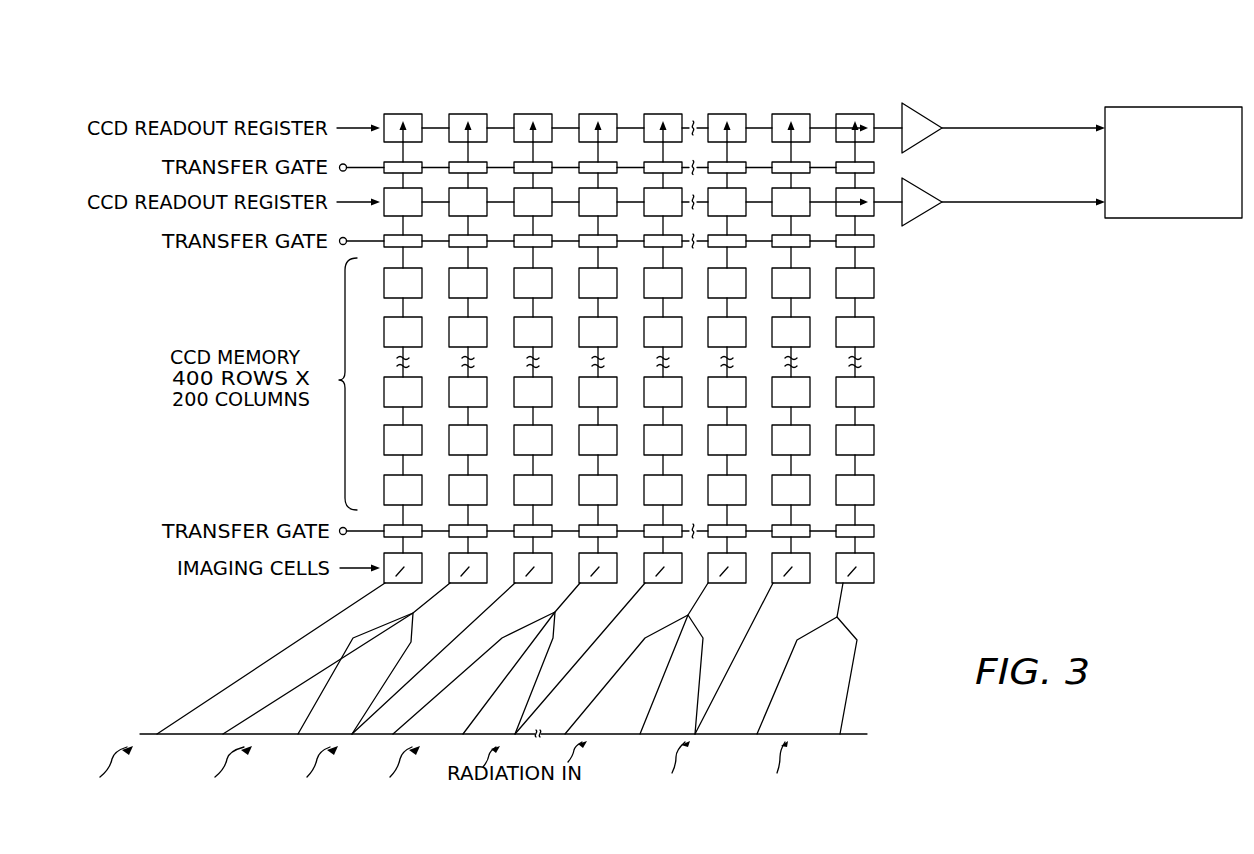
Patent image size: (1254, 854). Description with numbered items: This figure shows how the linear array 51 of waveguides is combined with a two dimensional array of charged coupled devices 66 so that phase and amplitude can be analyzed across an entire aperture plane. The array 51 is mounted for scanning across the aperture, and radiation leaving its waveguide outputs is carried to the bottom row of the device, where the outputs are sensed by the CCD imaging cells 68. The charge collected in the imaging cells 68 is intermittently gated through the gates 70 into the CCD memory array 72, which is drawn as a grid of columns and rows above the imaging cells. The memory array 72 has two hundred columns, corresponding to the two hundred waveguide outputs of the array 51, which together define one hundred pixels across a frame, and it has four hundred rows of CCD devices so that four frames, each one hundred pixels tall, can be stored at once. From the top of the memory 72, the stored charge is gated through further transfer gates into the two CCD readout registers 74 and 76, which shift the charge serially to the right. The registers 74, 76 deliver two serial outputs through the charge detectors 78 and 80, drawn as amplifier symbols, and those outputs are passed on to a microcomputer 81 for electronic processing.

The linear array 51 is at (217, 675).
The two dimensional array of charged coupled devices 66 is at (270, 94).
The CCD imaging cells 68 is at (877, 565).
The gates 70 is at (877, 528).
The CCD memory array 72 is at (889, 343).
The CCD readout register 74 is at (876, 218).
The CCD readout register 76 is at (795, 96).
The charge detector 78 is at (921, 207).
The charge detector 80 is at (925, 115).
The microcomputer 81 is at (1163, 107).